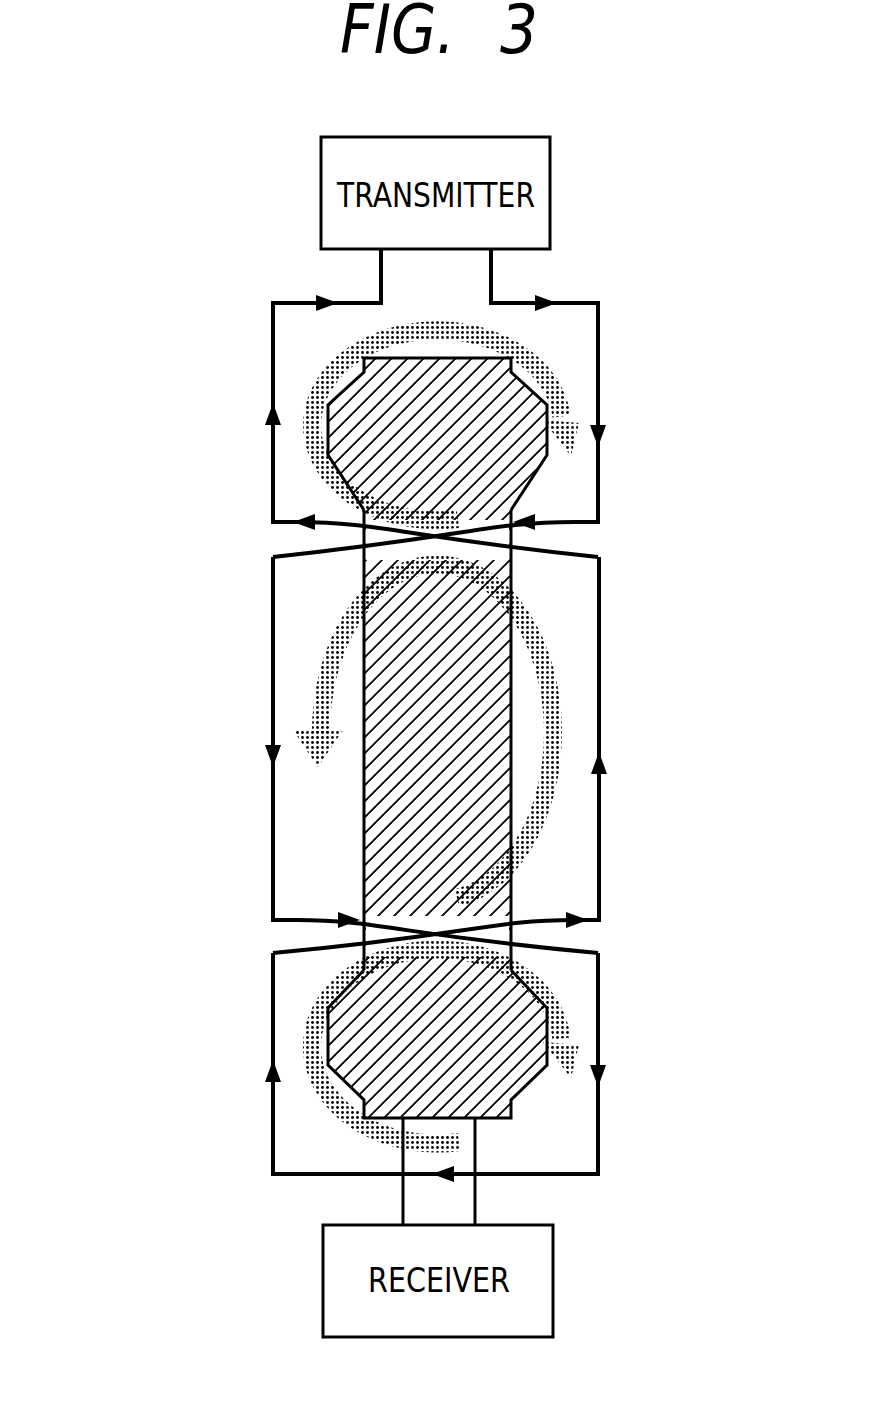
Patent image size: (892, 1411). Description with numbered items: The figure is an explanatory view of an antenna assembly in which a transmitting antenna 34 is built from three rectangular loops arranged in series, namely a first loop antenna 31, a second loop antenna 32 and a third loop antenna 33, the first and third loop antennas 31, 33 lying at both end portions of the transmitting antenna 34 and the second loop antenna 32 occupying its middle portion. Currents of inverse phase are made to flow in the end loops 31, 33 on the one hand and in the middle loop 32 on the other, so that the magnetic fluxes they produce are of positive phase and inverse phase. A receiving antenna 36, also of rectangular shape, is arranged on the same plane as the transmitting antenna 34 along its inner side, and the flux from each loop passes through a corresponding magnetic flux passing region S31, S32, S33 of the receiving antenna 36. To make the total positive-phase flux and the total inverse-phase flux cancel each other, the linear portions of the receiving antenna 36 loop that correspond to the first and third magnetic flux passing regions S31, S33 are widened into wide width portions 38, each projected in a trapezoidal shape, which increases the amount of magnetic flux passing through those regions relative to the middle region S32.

The first loop antenna 31 is at (728, 303).
The second loop antenna 32 is at (729, 558).
The third loop antenna 33 is at (728, 940).
The transmitting antenna 34 is at (273, 332).
The receiving antenna 36 is at (363, 673).
The wide width portion 38 is at (543, 440).
The first magnetic flux passing region S31 is at (430, 460).
The second magnetic flux passing region S32 is at (425, 778).
The third magnetic flux passing region S33 is at (437, 1060).